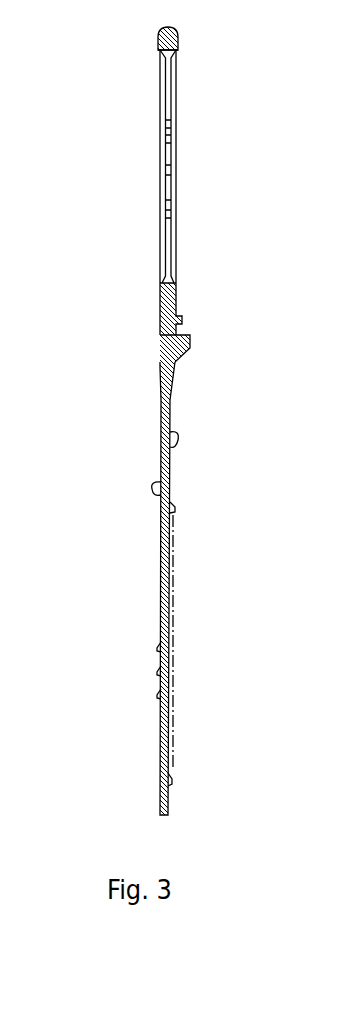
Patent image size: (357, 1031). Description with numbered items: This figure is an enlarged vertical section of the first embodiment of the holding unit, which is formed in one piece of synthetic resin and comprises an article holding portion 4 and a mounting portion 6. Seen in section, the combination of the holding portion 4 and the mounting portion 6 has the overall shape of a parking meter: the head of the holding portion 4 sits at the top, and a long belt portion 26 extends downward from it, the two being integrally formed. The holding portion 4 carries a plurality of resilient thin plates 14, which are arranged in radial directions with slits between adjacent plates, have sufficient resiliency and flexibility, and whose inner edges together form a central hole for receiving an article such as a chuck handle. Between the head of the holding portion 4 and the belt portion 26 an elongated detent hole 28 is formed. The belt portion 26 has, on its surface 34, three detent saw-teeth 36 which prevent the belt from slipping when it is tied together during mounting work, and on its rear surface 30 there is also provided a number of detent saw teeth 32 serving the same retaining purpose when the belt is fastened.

The article holding portion 4 is at (151, 163).
The resilient thin plates 14 is at (168, 80).
The elongated detent hole 28 is at (159, 342).
The rear surface 30 is at (163, 431).
The belt portion 26 is at (161, 530).
The mounting portion 6 is at (143, 587).
The detent saw-teeth 36 is at (158, 693).
The surface 34 is at (157, 492).
The detent saw teeth 32 is at (175, 509).